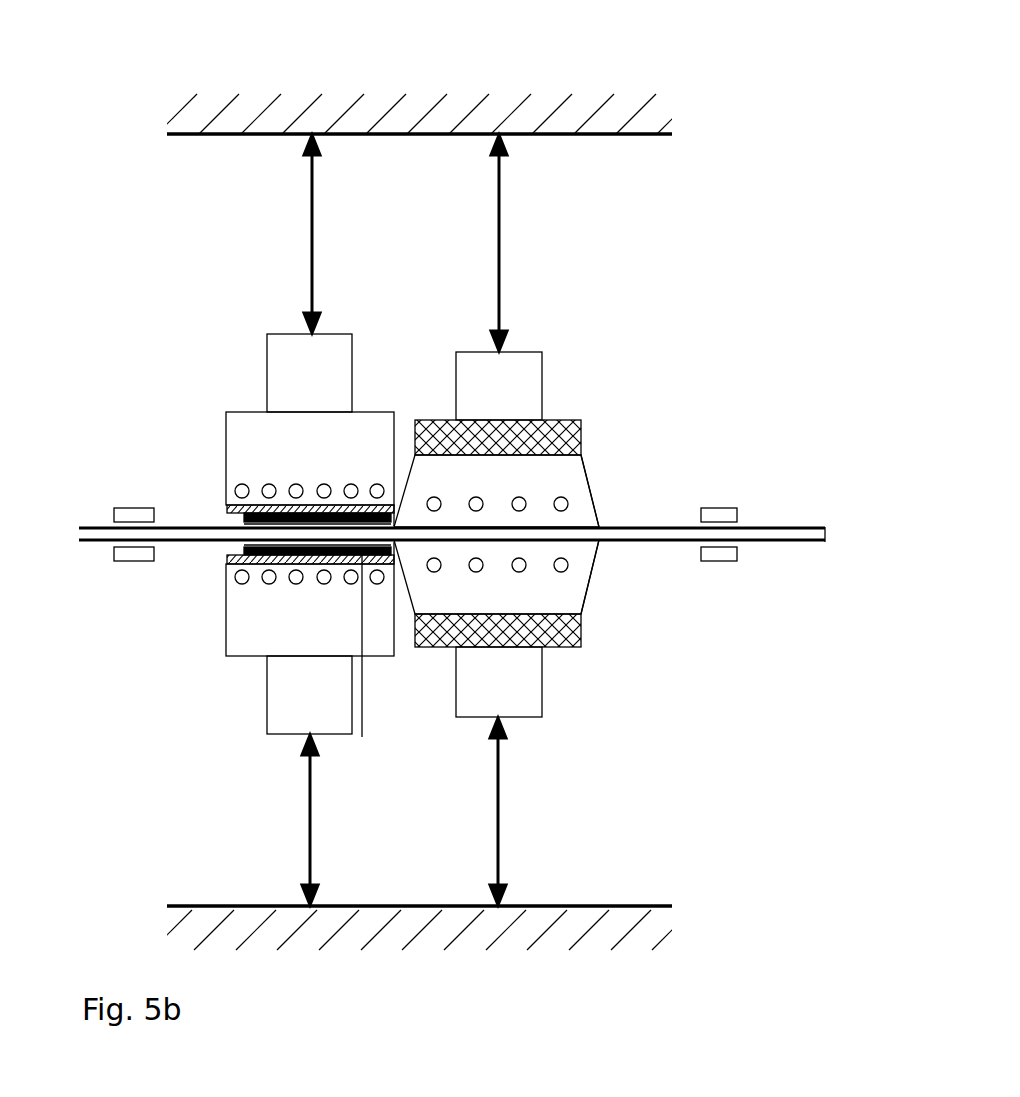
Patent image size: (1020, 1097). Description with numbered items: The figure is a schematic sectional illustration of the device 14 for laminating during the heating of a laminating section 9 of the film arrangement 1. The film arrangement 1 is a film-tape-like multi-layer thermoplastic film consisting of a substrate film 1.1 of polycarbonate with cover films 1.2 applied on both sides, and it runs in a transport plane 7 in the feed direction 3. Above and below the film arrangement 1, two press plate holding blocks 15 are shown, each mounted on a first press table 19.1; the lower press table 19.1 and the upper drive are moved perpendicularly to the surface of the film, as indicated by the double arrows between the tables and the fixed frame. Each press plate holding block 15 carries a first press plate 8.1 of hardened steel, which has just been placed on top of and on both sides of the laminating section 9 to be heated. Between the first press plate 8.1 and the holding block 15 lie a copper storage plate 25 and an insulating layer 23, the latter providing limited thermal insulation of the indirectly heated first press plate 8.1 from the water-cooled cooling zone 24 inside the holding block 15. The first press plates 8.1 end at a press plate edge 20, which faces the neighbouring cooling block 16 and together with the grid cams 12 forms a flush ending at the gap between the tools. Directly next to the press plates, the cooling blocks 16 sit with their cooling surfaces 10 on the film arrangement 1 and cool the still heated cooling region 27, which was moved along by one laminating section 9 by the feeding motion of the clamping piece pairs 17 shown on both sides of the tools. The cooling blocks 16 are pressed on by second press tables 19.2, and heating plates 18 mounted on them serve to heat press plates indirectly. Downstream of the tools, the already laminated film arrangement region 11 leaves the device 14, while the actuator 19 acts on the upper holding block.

The film arrangement 1 is at (68, 532).
The substrate film 1.1 is at (108, 535).
The cover films 1.2 is at (95, 523).
The feed direction 3 is at (840, 532).
The transport plane 7 is at (809, 506).
The first press plate 8.1 is at (245, 518).
The laminating section 9 is at (366, 661).
The cooling surface 10 is at (604, 510).
The laminated film arrangement region 11 is at (689, 511).
The grid cams 12 is at (396, 523).
The device 14 is at (772, 45).
The press plate holding block 15 is at (270, 462).
The cooling block 16 is at (535, 472).
The clamping piece pairs 17 is at (137, 513).
The heating plate 18 is at (535, 435).
The actuator 19 is at (305, 357).
The first press table 19.1 is at (305, 675).
The second press table 19.2 is at (512, 385).
The press plate edge 20 is at (396, 541).
The insulating layer 23 is at (247, 506).
The cooling zone 24 is at (303, 473).
The storage plate 25 is at (244, 510).
The cooling region 27 is at (548, 539).